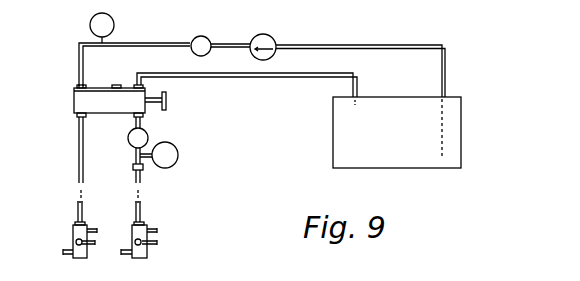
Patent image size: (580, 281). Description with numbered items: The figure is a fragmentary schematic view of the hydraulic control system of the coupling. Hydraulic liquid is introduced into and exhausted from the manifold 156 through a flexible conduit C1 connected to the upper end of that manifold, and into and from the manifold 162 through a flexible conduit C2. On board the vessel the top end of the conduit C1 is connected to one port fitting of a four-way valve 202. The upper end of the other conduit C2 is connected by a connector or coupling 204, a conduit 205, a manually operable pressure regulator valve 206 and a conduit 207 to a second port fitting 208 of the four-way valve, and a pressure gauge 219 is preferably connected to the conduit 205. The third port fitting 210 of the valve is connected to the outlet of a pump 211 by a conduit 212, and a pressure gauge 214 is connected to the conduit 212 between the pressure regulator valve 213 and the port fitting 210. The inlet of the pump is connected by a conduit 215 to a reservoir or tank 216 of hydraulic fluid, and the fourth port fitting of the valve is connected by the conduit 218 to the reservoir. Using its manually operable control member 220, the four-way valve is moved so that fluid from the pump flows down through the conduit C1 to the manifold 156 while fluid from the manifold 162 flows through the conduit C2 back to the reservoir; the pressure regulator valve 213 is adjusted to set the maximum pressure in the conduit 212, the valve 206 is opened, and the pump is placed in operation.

The four-way valve 202 is at (74, 103).
The connector or coupling 204 is at (143, 168).
The conduit 205 is at (133, 163).
The pressure regulator valve 206 is at (128, 138).
The conduit 207 is at (147, 125).
The second port fitting 208 is at (144, 114).
The third port fitting 210 is at (77, 88).
The pump 211 is at (277, 36).
The conduit 212 is at (143, 37).
The pressure regulator valve 213 is at (198, 35).
The pressure gauge 214 is at (90, 26).
The conduit 215 is at (407, 44).
The reservoir or tank 216 is at (461, 97).
The conduit 218 is at (323, 74).
The pressure gauge 219 is at (178, 151).
The manually operable control member 220 is at (176, 95).
The flexible conduit C1 is at (78, 175).
The flexible conduit C2 is at (141, 185).
The manifold 156 is at (73, 256).
The manifold 162 is at (147, 256).